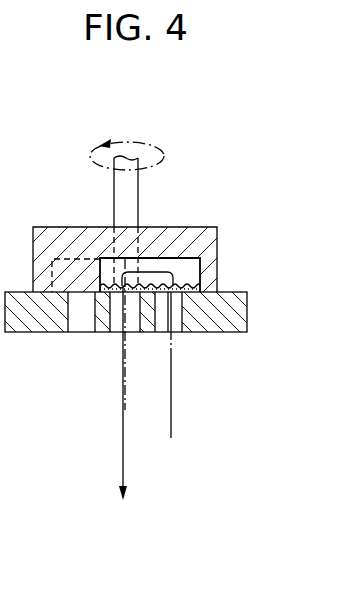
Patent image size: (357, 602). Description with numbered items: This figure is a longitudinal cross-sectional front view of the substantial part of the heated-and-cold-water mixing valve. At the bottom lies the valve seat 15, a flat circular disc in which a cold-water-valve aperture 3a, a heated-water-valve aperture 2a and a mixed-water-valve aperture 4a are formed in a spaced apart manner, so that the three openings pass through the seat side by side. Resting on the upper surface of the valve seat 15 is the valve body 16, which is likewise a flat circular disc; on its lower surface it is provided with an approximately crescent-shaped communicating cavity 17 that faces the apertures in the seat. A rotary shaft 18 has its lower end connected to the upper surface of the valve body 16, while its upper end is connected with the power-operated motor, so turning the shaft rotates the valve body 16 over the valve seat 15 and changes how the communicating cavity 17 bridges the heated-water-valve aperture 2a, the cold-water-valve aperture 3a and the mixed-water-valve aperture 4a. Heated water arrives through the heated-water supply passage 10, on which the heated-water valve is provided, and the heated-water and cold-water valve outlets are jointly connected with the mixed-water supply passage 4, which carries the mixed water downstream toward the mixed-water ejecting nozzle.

The rotary shaft 18 is at (141, 212).
The communicating cavity 17 is at (134, 246).
The valve body 16 is at (178, 263).
The valve seat 15 is at (147, 299).
The heated-water-valve aperture 2a is at (55, 339).
The mixed-water-valve aperture 4a is at (106, 339).
The cold-water-valve aperture 3a is at (184, 338).
The mixed-water supply passage 4 is at (106, 379).
The heated-water supply passage 10 is at (194, 370).